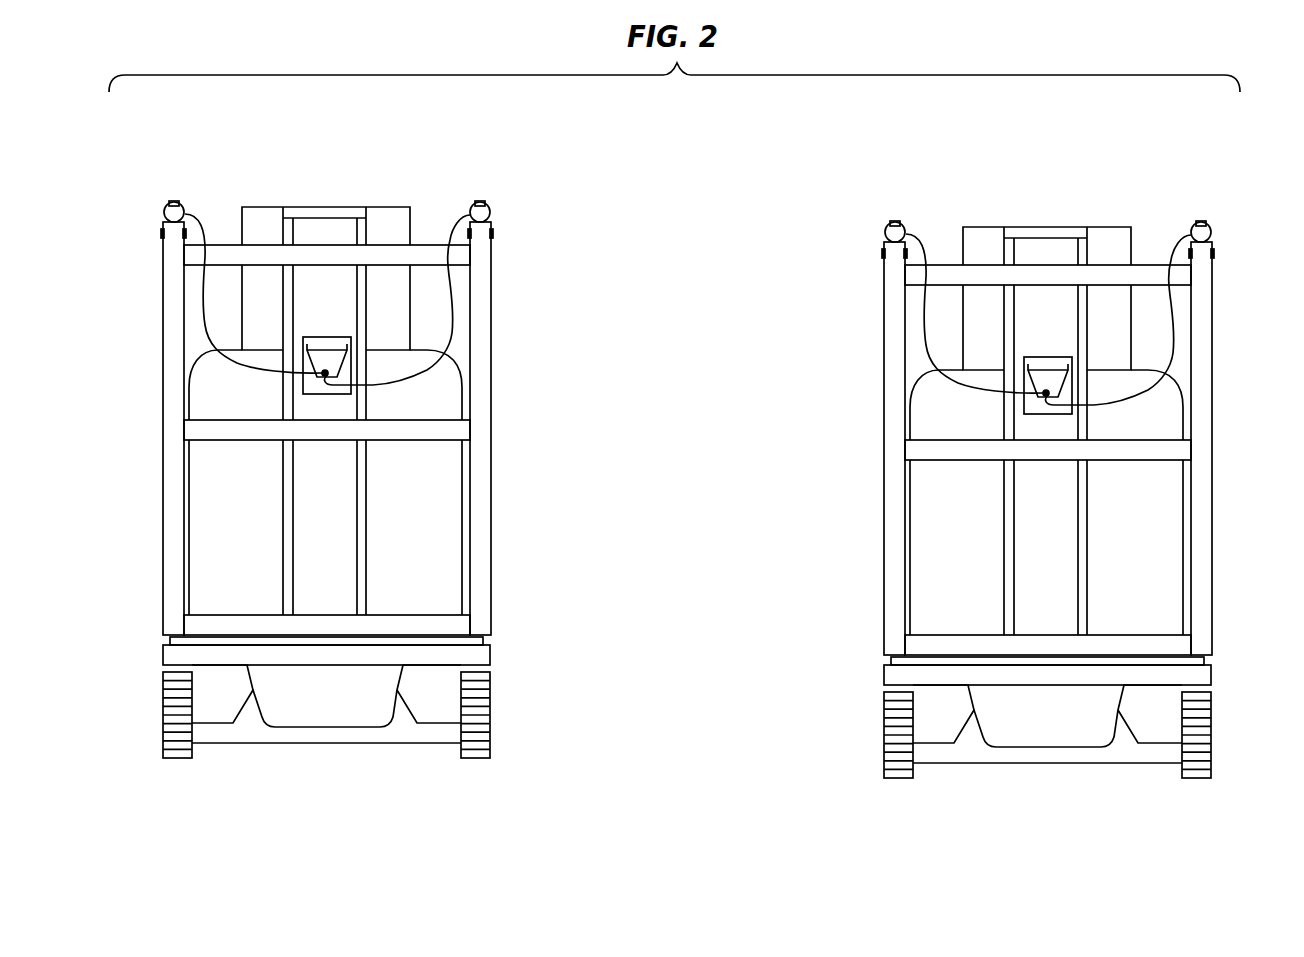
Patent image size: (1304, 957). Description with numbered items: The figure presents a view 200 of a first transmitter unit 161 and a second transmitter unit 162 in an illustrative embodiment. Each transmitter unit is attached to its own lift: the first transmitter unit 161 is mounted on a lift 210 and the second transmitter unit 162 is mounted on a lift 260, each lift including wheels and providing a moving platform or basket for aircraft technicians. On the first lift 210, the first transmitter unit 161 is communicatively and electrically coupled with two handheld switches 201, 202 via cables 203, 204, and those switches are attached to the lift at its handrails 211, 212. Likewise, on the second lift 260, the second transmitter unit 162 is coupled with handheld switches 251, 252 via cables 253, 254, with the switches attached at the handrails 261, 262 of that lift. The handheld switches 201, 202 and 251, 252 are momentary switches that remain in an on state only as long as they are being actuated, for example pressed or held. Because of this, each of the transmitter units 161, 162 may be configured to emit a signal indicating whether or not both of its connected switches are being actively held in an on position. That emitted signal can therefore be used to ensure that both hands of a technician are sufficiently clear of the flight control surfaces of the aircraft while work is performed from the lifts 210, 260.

The view 200 is at (672, 850).
The handheld switch 201 is at (173, 201).
The handheld switch 202 is at (480, 201).
The cable 203 is at (204, 293).
The cable 204 is at (452, 302).
The lift 210 is at (476, 653).
The handrail 211 is at (163, 221).
The handrail 212 is at (492, 213).
The first transmitter unit 161 is at (327, 405).
The handheld switch 251 is at (875, 200).
The handheld switch 252 is at (1224, 200).
The cable 253 is at (934, 313).
The cable 254 is at (1157, 320).
The lift 260 is at (1087, 717).
The handrail 261 is at (859, 442).
The handrail 262 is at (1237, 444).
The second transmitter unit 162 is at (1047, 433).